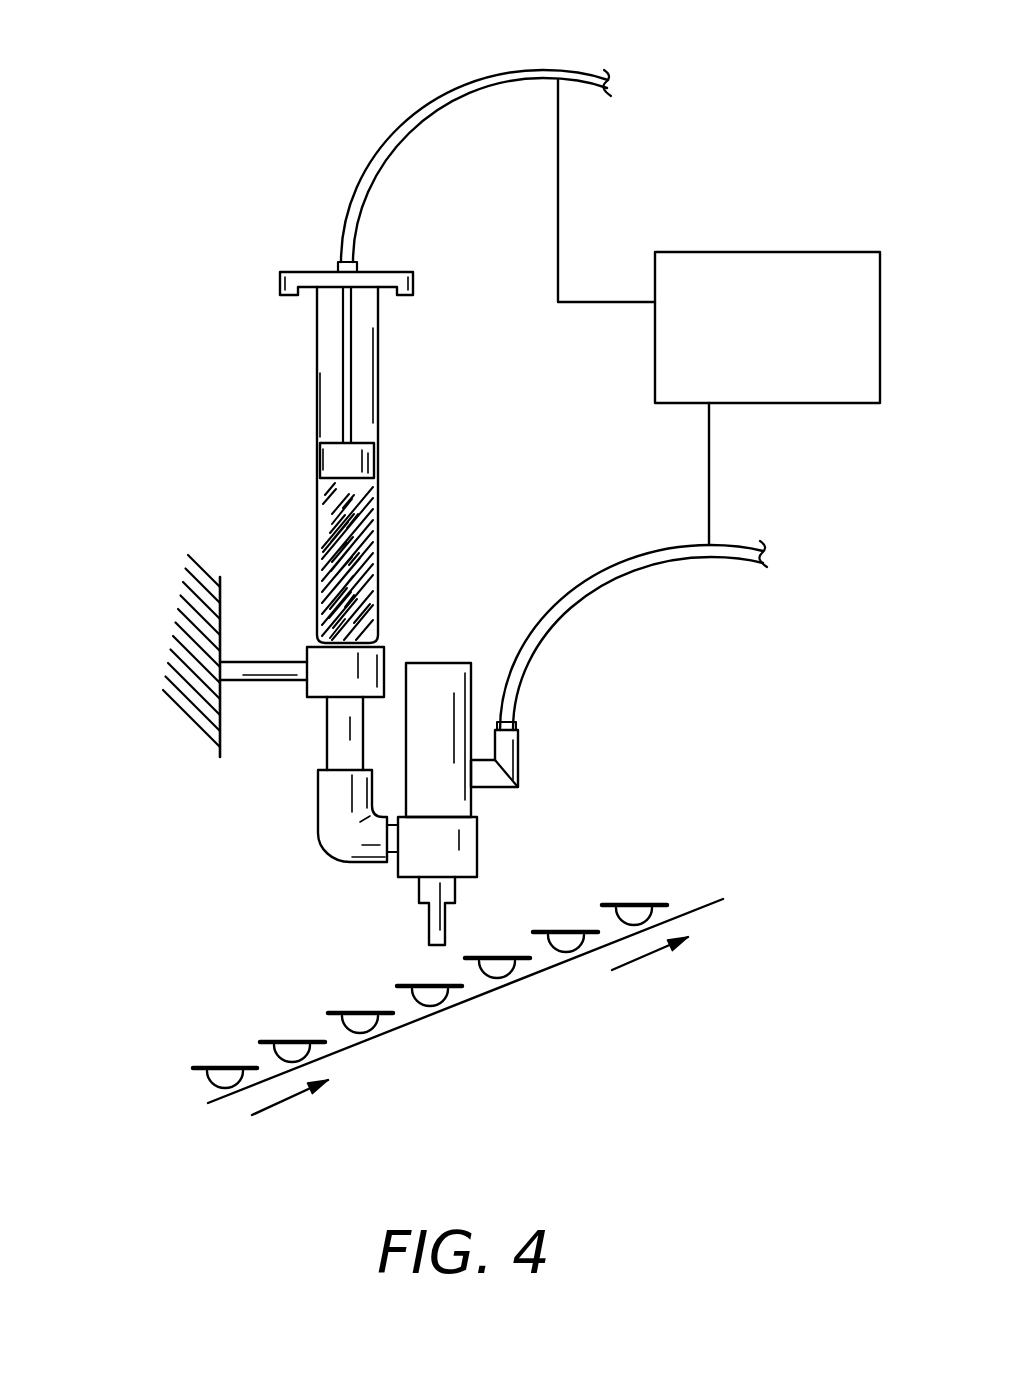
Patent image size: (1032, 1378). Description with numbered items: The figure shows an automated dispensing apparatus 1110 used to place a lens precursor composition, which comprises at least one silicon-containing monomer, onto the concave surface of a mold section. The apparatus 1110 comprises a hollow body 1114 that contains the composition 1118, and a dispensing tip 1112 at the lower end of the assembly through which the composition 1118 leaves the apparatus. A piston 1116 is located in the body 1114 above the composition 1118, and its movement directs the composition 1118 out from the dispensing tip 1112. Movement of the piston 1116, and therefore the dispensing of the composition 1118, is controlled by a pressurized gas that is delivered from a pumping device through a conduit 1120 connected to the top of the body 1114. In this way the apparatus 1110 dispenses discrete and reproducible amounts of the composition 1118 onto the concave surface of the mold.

The automated dispensing apparatus 1110 is at (212, 323).
The dispensing tip 1112 is at (447, 928).
The hollow body 1114 is at (377, 558).
The piston 1116 is at (373, 457).
The composition 1118 is at (337, 522).
The conduit 1120 is at (612, 86).